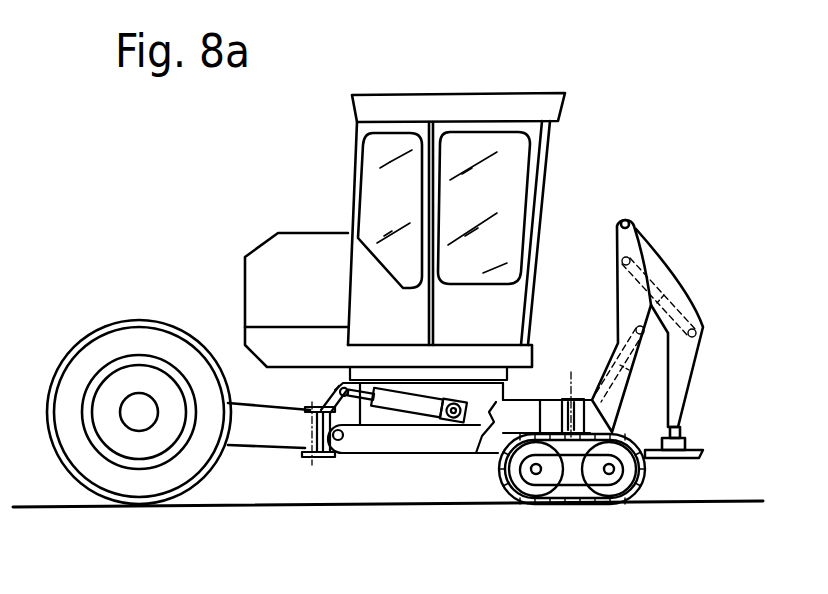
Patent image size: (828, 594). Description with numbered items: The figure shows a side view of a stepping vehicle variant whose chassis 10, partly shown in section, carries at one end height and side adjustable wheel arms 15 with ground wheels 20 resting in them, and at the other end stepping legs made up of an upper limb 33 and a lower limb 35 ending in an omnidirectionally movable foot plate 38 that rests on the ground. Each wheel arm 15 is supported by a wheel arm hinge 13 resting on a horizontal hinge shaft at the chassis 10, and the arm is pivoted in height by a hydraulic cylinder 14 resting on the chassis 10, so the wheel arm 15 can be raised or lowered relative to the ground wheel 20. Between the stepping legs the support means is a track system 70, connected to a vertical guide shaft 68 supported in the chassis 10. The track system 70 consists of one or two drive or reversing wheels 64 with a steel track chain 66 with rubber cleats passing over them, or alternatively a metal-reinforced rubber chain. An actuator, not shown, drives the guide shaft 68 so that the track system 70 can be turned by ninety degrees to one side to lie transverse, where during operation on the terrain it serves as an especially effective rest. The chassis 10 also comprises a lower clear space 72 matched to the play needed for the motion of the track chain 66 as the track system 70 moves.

The chassis 10 is at (441, 437).
The wheel arm hinge 13 is at (327, 457).
The hydraulic cylinder 14 is at (402, 405).
The wheel arm 15 is at (273, 433).
The ground wheel 20 is at (140, 488).
The upper limb 33 is at (622, 285).
The lower limb 35 is at (653, 262).
The foot plate 38 is at (700, 438).
The drive or reversing wheel 64 is at (518, 502).
The steel track chain 66 is at (646, 475).
The vertical guide shaft 68 is at (569, 395).
The track system 70 is at (586, 509).
The lower clear space 72 is at (497, 455).